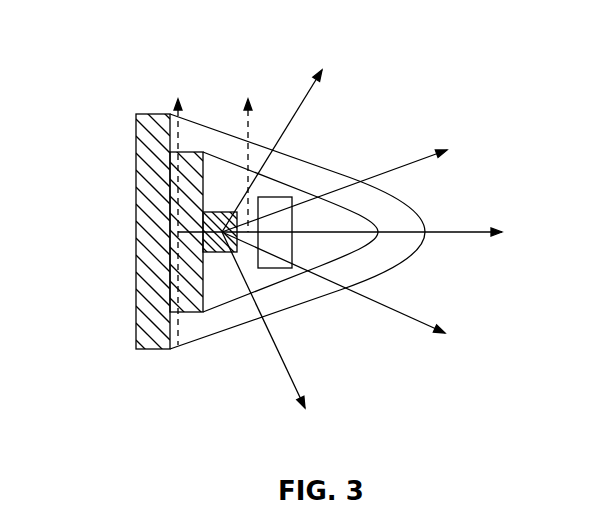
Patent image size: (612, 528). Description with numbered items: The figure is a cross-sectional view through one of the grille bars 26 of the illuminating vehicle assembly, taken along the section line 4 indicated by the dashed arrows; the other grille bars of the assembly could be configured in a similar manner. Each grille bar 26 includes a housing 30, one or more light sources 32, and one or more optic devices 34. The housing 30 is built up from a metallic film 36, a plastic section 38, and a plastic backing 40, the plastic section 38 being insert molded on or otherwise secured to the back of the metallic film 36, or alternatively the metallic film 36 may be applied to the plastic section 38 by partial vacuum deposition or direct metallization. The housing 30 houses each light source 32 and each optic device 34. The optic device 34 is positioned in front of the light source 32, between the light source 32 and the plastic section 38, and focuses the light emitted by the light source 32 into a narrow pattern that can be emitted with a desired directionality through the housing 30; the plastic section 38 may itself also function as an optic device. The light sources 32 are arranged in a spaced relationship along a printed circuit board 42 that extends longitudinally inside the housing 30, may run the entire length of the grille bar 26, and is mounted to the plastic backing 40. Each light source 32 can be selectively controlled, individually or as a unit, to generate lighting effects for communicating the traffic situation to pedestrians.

The section line 4- 4 is at (214, 205).
The grille bar 26 is at (206, 229).
The housing 30 is at (328, 149).
The light source 32 is at (223, 217).
The optic device 34 is at (273, 268).
The metallic film 36 is at (405, 207).
The plastic section 38 is at (390, 257).
The plastic backing 40 is at (136, 245).
The printed circuit board 42 is at (178, 313).